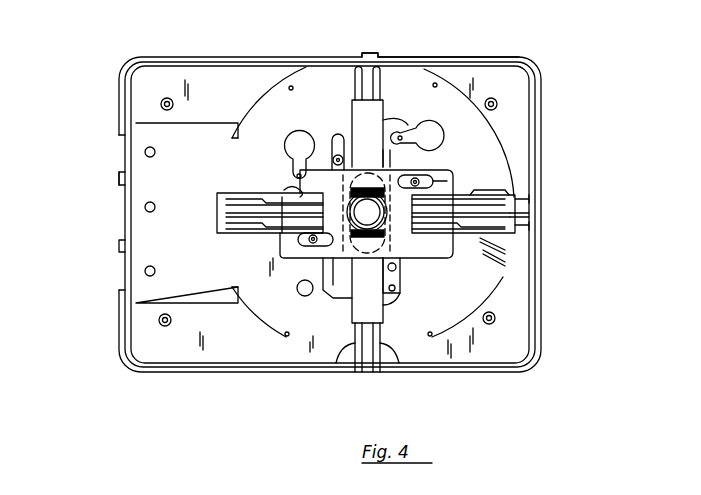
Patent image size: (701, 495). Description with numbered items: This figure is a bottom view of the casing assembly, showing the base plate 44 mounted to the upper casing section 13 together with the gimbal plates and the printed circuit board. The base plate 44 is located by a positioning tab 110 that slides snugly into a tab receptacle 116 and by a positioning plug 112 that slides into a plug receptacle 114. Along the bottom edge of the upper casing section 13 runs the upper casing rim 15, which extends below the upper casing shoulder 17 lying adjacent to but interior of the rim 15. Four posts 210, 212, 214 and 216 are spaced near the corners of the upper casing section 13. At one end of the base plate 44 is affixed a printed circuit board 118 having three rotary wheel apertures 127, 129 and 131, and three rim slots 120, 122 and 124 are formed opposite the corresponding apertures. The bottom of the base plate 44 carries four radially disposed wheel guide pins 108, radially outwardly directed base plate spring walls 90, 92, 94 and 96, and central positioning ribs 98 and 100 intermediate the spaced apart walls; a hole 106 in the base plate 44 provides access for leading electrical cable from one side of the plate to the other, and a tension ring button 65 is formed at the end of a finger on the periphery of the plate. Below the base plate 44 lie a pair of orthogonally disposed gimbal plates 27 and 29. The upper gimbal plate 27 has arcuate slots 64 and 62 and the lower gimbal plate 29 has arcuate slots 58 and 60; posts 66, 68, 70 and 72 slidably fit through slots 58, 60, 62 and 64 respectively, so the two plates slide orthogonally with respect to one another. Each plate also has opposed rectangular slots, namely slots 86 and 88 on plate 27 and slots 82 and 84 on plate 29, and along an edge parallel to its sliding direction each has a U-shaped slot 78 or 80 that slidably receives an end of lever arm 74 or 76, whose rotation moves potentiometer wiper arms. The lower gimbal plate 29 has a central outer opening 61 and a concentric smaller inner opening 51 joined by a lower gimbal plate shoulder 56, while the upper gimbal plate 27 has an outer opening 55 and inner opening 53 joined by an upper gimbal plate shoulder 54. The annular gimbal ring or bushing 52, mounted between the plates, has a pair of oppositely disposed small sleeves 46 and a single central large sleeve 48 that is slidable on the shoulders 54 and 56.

The upper casing section 13 is at (542, 155).
The upper casing rim 15 is at (156, 58).
The upper casing shoulder 17 is at (193, 61).
The upper gimbal plate 27 is at (400, 120).
The lower gimbal plate 29 is at (446, 180).
The base plate 44 is at (498, 139).
The small sleeves 46 is at (388, 212).
The large sleeve 48 is at (400, 248).
The inner opening 51 is at (347, 212).
The gimbal ring or bushing 52 is at (385, 222).
The inner opening 53 is at (337, 278).
The upper gimbal plate shoulder 54 is at (385, 176).
The outer opening 55 is at (396, 256).
The lower gimbal plate shoulder 56 is at (336, 279).
The arcuate slot 58 is at (433, 182).
The arcuate slot 60 is at (300, 248).
The central outer opening 61 is at (346, 214).
The arcuate slot 62 is at (392, 297).
The arcuate slot 64 is at (338, 135).
The tension ring button 65 is at (506, 263).
The post 66 is at (420, 179).
The post 68 is at (396, 289).
The post 70 is at (308, 247).
The post 72 is at (334, 152).
The lever arm 74 is at (286, 163).
The lever arm 76 is at (433, 129).
The U-shaped slot 78 is at (290, 173).
The U-shaped slot 80 is at (398, 133).
The rectangular slot 82 is at (284, 190).
The rectangular slot 84 is at (463, 194).
The rectangular slot 86 is at (367, 290).
The rectangular slot 88 is at (367, 133).
The base plate spring wall 90 is at (238, 191).
The base plate spring wall 92 is at (513, 192).
The base plate spring wall 94 is at (337, 358).
The base plate spring wall 96 is at (354, 82).
The central positioning rib 98 is at (237, 218).
The central positioning rib 100 is at (465, 218).
The hole 106 is at (307, 296).
The wheel guide pins 108 is at (437, 82).
The locate lip or positioning tab 110 is at (378, 56).
The locate or positioning plug 112 is at (537, 205).
The plug receptacle 114 is at (542, 213).
The lip or tab receptacle 116 is at (362, 55).
The printed circuit board 118 is at (199, 304).
The rim slot 120 is at (126, 150).
The rim slot 122 is at (124, 212).
The rim slot 124 is at (126, 273).
The rotary wheel aperture 127 is at (153, 157).
The rotary wheel aperture 129 is at (153, 212).
The rotary wheel aperture 131 is at (153, 276).
The post 210 is at (160, 102).
The post 212 is at (498, 105).
The post 214 is at (487, 325).
The post 216 is at (161, 327).